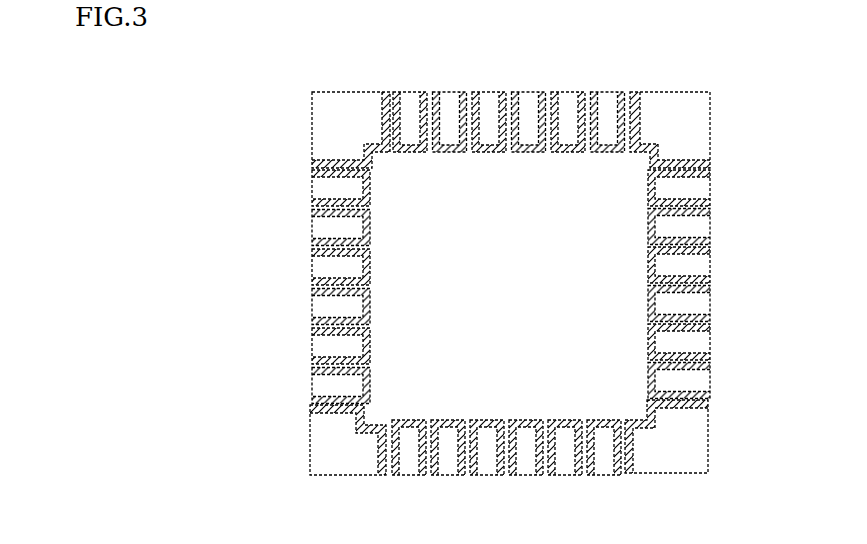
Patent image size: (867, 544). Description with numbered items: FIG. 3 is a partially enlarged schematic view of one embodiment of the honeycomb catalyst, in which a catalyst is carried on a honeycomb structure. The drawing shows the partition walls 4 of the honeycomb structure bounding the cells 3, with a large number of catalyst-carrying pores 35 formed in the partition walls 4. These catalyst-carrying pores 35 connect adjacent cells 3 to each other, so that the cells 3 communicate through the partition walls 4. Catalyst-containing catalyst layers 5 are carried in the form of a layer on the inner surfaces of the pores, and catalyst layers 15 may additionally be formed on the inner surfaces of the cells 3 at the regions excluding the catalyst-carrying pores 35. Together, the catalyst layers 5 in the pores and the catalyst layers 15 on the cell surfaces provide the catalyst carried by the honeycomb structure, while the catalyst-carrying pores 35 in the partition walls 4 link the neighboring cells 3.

The cell 3 is at (484, 249).
The partition wall 4 is at (497, 100).
The catalyst layer 5 is at (690, 315).
The catalyst layer 15 is at (340, 232).
The catalyst-carrying pore 35 is at (333, 357).